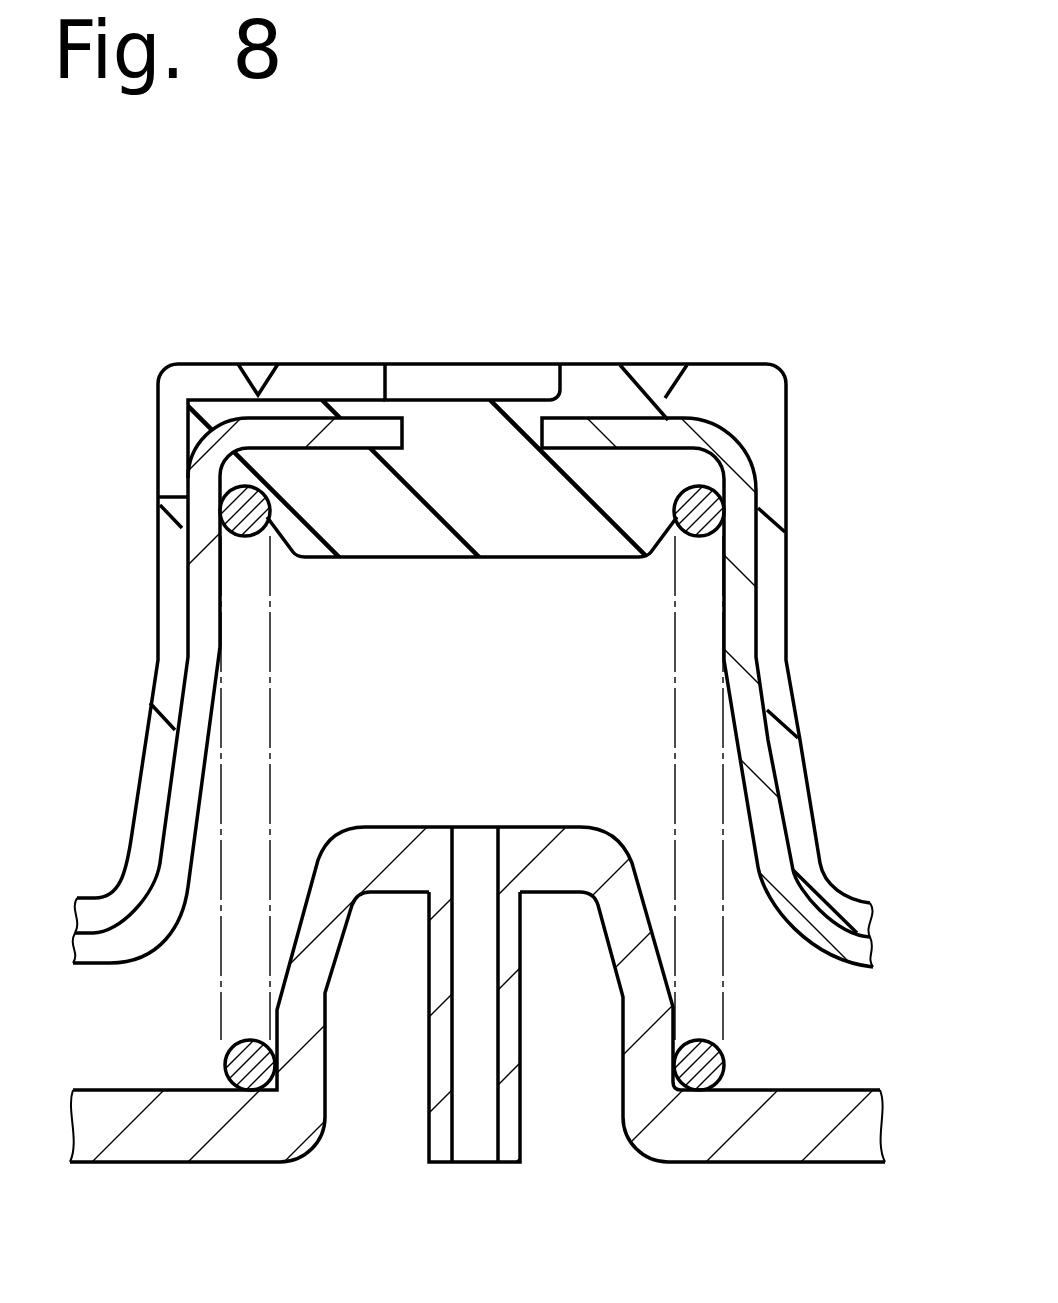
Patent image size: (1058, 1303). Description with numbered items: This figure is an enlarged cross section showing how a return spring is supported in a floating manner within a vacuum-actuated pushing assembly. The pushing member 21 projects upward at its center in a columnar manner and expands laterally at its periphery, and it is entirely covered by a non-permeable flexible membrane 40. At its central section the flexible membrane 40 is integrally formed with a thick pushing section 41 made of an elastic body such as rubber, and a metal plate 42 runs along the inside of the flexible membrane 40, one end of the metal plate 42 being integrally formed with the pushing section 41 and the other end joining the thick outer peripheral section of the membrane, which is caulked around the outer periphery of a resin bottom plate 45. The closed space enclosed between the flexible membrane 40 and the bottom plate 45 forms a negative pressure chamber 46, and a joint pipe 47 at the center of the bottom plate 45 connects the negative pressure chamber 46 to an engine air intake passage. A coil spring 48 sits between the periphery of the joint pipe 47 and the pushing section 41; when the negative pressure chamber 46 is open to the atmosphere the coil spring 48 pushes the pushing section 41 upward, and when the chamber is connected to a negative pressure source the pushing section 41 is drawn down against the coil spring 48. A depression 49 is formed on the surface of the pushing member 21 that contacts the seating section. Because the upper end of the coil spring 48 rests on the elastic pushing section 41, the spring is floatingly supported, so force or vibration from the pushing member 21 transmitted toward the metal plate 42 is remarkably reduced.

The pushing member 21 is at (208, 270).
The flexible membrane 40 is at (157, 430).
The pushing section 41 is at (498, 442).
The metal plate 42 is at (195, 612).
The bottom plate 45 is at (193, 1150).
The negative pressure chamber 46 is at (487, 670).
The joint pipe 47 is at (468, 1150).
The coil spring 48 is at (257, 712).
The depression 49 is at (433, 372).